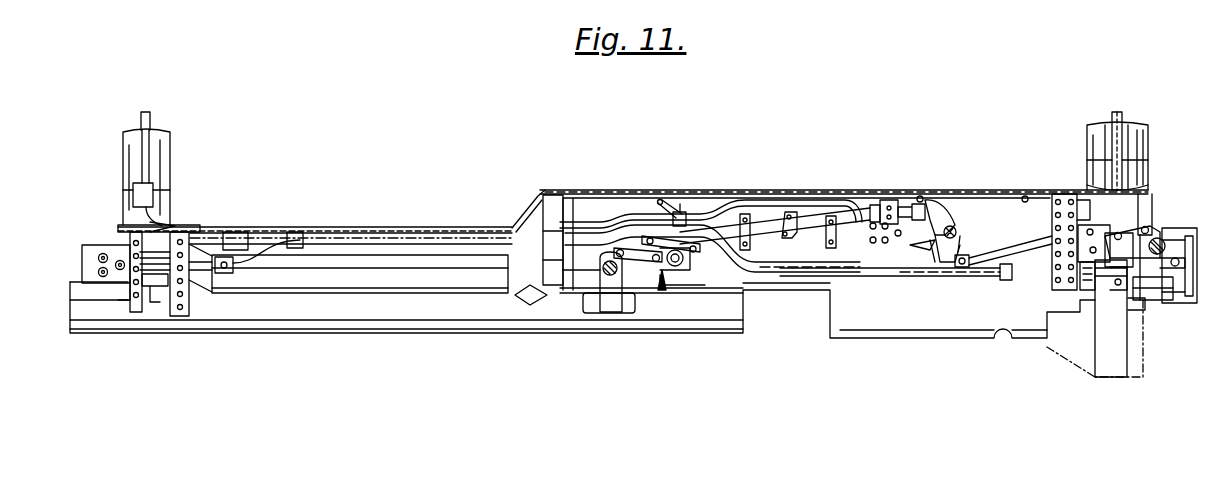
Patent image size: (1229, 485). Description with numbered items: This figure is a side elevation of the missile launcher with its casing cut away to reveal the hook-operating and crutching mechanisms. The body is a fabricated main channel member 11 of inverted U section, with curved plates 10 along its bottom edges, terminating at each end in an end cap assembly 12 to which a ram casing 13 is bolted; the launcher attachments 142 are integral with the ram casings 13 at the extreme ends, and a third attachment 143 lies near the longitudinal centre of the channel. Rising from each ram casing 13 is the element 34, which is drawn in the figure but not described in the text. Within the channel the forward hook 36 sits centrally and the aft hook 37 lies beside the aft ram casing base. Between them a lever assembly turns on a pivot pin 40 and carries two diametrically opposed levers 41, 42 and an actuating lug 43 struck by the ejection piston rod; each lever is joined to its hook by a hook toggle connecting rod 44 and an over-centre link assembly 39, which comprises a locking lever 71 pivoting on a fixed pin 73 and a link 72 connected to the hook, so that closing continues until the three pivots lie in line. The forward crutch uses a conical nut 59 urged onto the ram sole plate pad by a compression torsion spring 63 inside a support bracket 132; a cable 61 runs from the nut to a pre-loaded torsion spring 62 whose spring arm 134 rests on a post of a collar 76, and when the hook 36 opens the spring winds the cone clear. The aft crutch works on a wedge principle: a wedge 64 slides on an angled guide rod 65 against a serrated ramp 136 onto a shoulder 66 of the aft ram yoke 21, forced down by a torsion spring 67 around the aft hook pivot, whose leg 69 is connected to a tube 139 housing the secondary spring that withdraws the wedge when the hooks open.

The plates 10 is at (582, 268).
The main channel member 11 is at (352, 228).
The end cap assembly 12 is at (1152, 215).
The ram casing 13 is at (168, 150).
The yoke 21 is at (1125, 345).
The rod 34 is at (150, 215).
The forward hook 36 is at (614, 310).
The aft hook 37 is at (1175, 290).
The over-centre link assembly 39 is at (660, 275).
The pivot pin 40 is at (962, 245).
The lever 41 is at (950, 235).
The lever 42 is at (956, 262).
The actuating lug 43 is at (940, 255).
The hook toggle connecting rod 44 is at (795, 225).
The conical nut 59 is at (152, 288).
The cable 61 is at (196, 280).
The torsion spring 62 is at (132, 290).
The compression torsion spring 63 is at (176, 233).
The wedge 64 is at (1112, 290).
The guide rod 65 is at (1098, 285).
The shoulder 66 is at (1100, 290).
The torsion spring 67 is at (1178, 236).
The leg 69 is at (1152, 300).
The locking lever 71 is at (652, 238).
The link 72 is at (640, 270).
The pin 73 is at (683, 275).
The collar 76 is at (700, 275).
The support bracket 132 is at (170, 224).
The spring arm 134 is at (690, 226).
The ramp 136 is at (1088, 282).
The tube 139 is at (1148, 306).
The launcher attachments 142 is at (96, 242).
The third attachment 143 is at (522, 210).